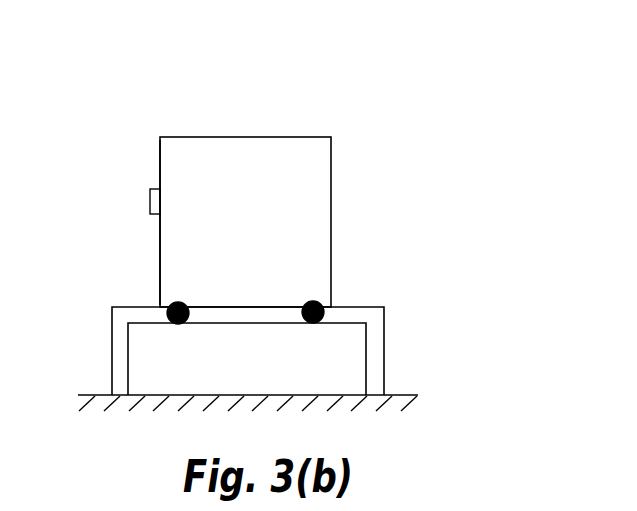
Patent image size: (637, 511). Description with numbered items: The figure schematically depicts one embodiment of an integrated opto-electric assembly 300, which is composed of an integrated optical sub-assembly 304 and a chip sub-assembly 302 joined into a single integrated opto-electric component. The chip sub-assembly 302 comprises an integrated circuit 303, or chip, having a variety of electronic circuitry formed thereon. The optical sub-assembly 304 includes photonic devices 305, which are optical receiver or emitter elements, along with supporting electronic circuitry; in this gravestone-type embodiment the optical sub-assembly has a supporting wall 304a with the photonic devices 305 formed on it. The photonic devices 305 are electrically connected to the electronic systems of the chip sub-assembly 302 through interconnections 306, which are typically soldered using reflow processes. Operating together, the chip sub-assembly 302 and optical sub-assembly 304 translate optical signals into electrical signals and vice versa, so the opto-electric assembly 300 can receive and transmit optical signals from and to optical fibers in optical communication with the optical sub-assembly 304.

The integrated opto-electric assembly 300 is at (489, 112).
The chip sub-assembly 302 is at (384, 348).
The integrated circuit 303 is at (265, 372).
The optical sub-assembly 304 is at (331, 180).
The supporting wall 304a is at (160, 252).
The photonic devices 305 is at (150, 198).
The interconnections 306 is at (178, 302).